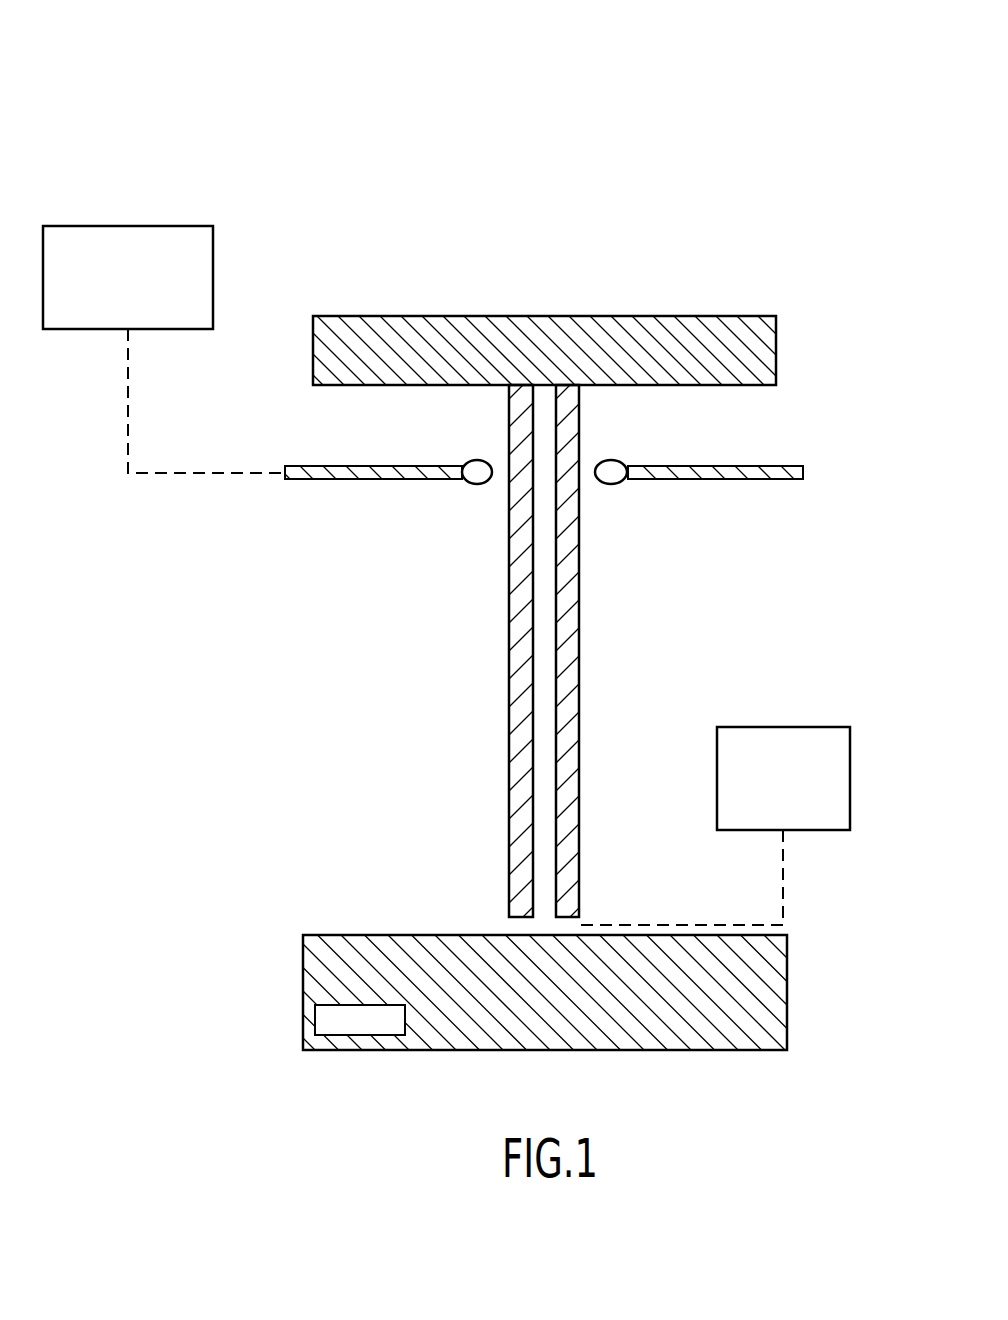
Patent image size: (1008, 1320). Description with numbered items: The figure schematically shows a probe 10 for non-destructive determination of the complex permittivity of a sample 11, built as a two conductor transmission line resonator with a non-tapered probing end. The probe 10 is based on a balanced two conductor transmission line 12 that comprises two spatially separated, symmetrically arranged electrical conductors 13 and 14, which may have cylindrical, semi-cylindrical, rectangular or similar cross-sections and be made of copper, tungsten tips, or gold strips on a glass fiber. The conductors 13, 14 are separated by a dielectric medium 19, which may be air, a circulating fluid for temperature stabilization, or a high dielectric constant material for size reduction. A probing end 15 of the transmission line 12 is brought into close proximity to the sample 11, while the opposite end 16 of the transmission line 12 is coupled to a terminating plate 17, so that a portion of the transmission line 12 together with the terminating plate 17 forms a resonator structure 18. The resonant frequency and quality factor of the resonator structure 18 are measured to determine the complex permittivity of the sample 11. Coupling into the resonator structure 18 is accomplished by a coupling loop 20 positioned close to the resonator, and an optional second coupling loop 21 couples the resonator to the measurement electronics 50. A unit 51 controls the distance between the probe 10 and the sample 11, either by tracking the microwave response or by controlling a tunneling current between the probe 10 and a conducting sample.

The probe 10 is at (840, 178).
The sample 11 is at (787, 1050).
The transmission line 12 is at (631, 651).
The electrical conductor 13 is at (520, 595).
The electrical conductor 14 is at (567, 662).
The probing end 15 is at (477, 909).
The opposite end 16 is at (580, 388).
The terminating plate 17 is at (708, 333).
The resonator structure 18 is at (368, 561).
The dielectric medium 19 is at (543, 772).
The coupling loop 20 is at (805, 470).
The second coupling loop 21 is at (357, 473).
The measurement electronics 50 is at (213, 255).
The unit 51 is at (850, 777).